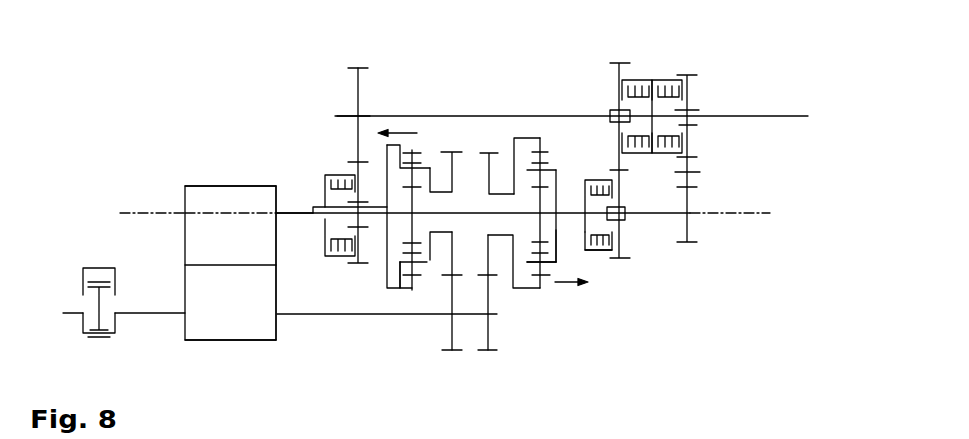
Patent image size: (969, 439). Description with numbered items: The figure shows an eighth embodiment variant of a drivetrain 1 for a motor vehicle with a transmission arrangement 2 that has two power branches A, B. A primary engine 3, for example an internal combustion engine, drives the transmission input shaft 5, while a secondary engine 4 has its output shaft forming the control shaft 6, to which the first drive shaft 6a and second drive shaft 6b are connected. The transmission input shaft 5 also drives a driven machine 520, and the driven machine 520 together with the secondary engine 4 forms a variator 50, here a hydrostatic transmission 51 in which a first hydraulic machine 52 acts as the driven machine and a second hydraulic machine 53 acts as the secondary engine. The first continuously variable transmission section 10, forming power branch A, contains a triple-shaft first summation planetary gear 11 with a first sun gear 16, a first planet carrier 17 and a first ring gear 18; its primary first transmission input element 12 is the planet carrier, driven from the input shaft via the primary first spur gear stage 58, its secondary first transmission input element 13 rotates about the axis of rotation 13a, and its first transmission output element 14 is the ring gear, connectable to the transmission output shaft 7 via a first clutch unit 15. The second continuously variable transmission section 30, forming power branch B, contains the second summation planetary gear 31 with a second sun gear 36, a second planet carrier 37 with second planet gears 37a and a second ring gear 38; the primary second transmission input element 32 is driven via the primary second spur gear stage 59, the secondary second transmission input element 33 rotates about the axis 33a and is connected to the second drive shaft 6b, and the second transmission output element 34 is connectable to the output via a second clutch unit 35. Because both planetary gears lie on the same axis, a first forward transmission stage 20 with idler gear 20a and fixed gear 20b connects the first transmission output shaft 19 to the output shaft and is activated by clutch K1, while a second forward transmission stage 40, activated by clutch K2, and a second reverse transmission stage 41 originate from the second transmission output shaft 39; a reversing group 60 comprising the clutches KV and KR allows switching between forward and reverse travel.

The drivetrain 1 is at (246, 159).
The transmission arrangement 2 is at (548, 326).
The primary engine 3 is at (70, 281).
The secondary engine 4 is at (198, 184).
The transmission input shaft 5 is at (161, 313).
The control shaft 6 is at (292, 212).
The first drive shaft 6a is at (389, 289).
The second drive shaft 6b is at (508, 217).
The transmission output shaft 7 is at (782, 116).
The first continuously variable transmission section 10 is at (380, 307).
The first summation planetary gear 11 is at (398, 301).
The primary first transmission input element 12 is at (468, 272).
The secondary first transmission input element 13 is at (385, 218).
The axis of rotation 13a is at (122, 213).
The first transmission output element 14 is at (385, 168).
The first clutch unit 15 is at (327, 268).
The first sun gear 16 is at (420, 206).
The first planet carrier 17 is at (428, 168).
The first ring gear 18 is at (417, 145).
The first transmission output shaft 19 is at (315, 205).
The first forward transmission stage 20 is at (361, 56).
The idler gear 20a is at (350, 233).
The fixed gear 20b is at (353, 85).
The second continuously variable transmission section 30 is at (518, 304).
The second summation planetary gear 31 is at (537, 301).
The primary second transmission input element 32 is at (490, 163).
The secondary second transmission input element 33 is at (528, 213).
The axis of rotation 33a is at (765, 214).
The second transmission output element 34 is at (560, 235).
The second clutch unit 35 is at (602, 258).
The second sun gear 36 is at (513, 240).
The second planet carrier 37 is at (562, 188).
The second planet gears 37a is at (553, 278).
The second ring gear 38 is at (545, 135).
The second transmission output shaft 39 is at (614, 243).
The second forward transmission stage 40 is at (632, 176).
The second reverse transmission stage 41 is at (706, 173).
The variator 50 is at (183, 188).
The hydrostatic transmission 51 is at (214, 345).
The first hydraulic machine 52 is at (246, 313).
The second hydraulic machine 53 is at (246, 252).
The primary first spur gear stage 58 is at (445, 362).
The primary second spur gear stage 59 is at (485, 362).
The reversing group 60 is at (681, 69).
The driven machine 520 is at (263, 314).
The first power branch A is at (397, 132).
The second power branch B is at (567, 283).
The first clutch K1 is at (340, 174).
The second clutch K2 is at (596, 180).
The forward clutch KV is at (637, 78).
The reverse clutch KR is at (667, 78).